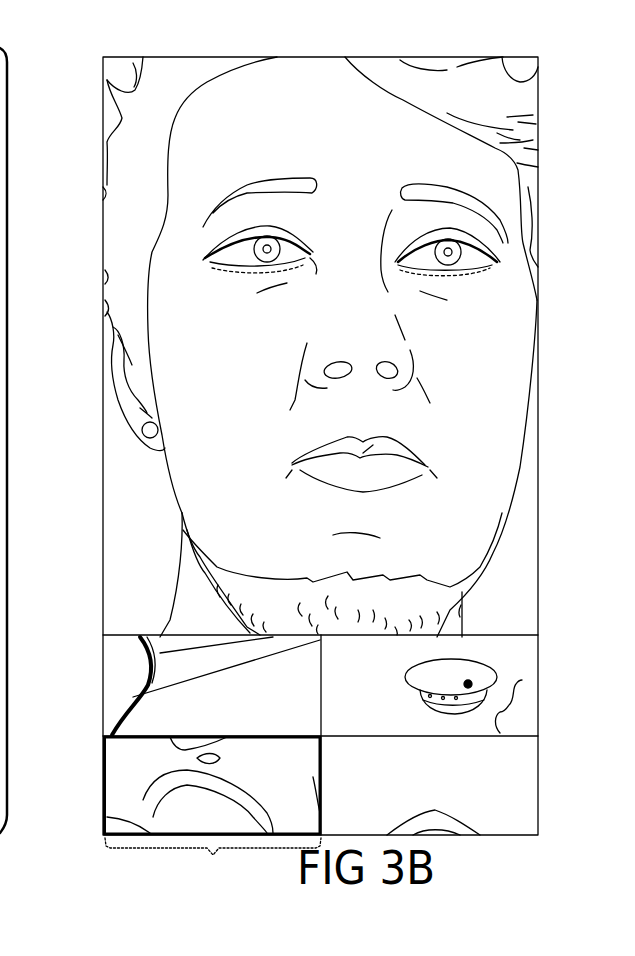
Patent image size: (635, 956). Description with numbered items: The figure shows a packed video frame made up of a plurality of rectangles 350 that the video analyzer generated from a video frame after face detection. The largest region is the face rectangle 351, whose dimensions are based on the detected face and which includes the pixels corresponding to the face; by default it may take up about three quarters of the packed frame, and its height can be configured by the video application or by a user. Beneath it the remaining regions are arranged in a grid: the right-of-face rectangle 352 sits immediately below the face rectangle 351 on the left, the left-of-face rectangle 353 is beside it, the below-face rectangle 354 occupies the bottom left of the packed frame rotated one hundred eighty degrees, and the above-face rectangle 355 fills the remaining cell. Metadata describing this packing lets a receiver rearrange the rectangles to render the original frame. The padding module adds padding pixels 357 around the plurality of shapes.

The plurality of rectangles 350 is at (78, 49).
The face rectangle 351 is at (107, 330).
The right-of-face rectangle 352 is at (103, 676).
The left-of-face rectangle 353 is at (522, 680).
The below-face rectangle 354 is at (103, 763).
The above-face rectangle 355 is at (538, 770).
The padding pixels 357 is at (213, 859).